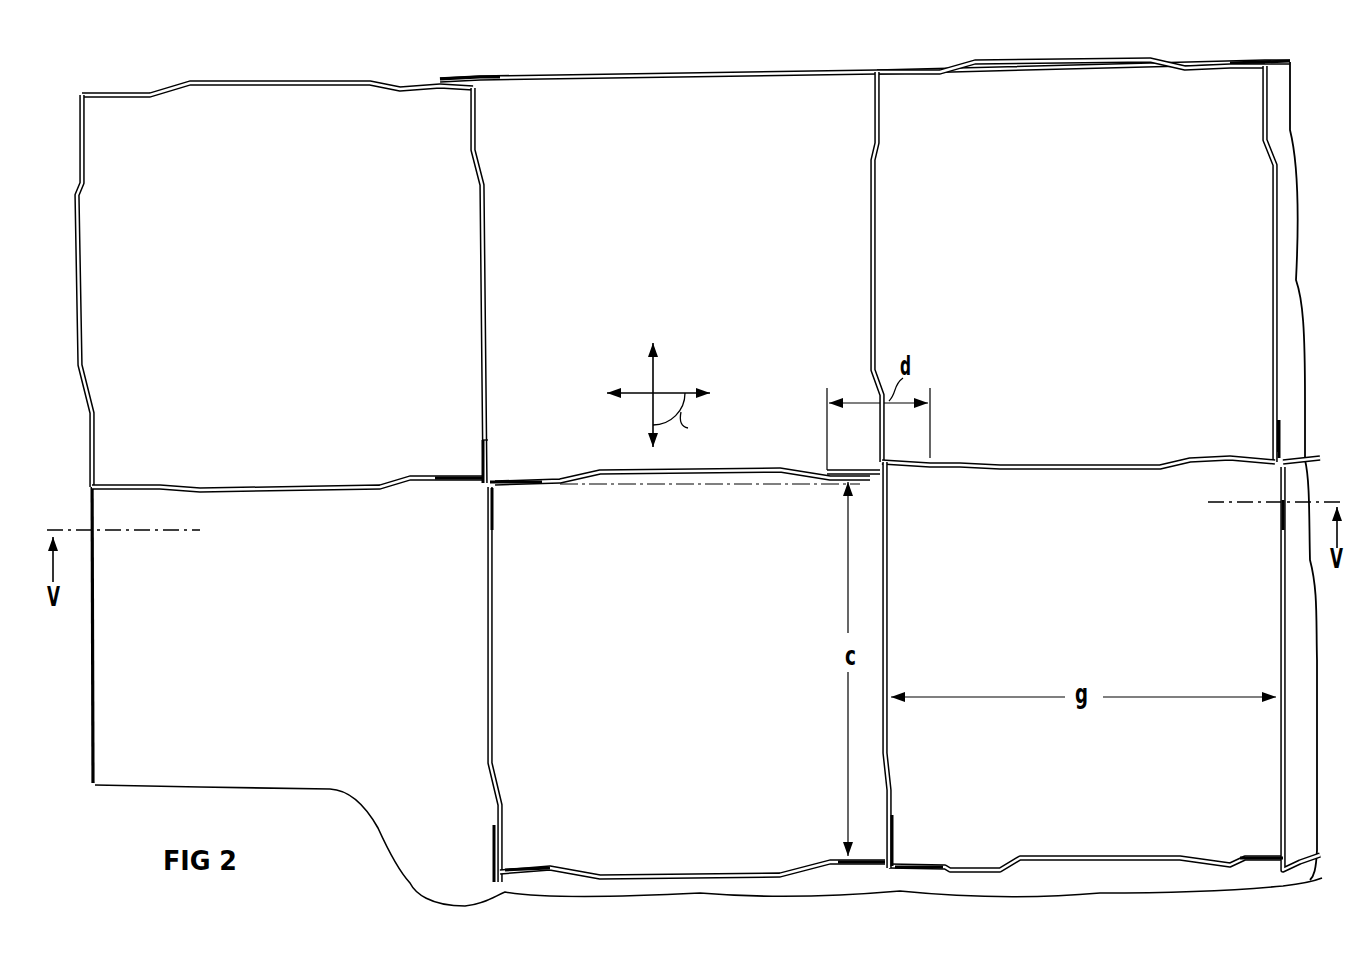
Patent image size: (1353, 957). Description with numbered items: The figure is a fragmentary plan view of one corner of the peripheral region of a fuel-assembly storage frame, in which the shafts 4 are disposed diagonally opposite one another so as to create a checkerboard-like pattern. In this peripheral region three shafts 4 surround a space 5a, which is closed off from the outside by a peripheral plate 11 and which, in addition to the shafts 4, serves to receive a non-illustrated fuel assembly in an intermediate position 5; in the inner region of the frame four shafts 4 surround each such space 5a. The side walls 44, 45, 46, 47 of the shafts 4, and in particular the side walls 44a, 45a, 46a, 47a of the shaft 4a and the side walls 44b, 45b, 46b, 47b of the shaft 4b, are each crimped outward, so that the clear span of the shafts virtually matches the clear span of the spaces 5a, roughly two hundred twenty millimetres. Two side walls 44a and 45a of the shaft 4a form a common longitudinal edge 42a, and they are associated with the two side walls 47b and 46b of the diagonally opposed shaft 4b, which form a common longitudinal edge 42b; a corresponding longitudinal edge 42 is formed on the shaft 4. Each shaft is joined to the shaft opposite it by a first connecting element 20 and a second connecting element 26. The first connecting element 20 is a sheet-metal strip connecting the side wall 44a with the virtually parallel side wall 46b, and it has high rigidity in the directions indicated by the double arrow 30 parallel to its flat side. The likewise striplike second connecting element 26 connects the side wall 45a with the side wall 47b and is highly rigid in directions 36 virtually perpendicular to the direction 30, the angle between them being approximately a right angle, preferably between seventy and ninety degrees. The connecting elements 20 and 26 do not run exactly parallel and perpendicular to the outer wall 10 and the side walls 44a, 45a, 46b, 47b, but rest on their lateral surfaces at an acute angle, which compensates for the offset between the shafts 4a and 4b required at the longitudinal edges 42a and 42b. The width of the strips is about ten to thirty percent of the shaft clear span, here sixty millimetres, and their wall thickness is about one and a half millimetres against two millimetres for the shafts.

The shaft 4 is at (1074, 263).
The shaft 4a is at (281, 286).
The shaft 4b is at (721, 672).
The intermediate position 5 is at (686, 462).
The space 5a is at (756, 110).
The outer wall 10 is at (695, 453).
The peripheral plate 11 is at (667, 76).
The first connecting element 20 is at (488, 441).
The second connecting element 26 is at (528, 479).
The double arrow 30 is at (657, 366).
The directions 36 is at (640, 396).
The longitudinal edge 42 is at (1268, 450).
The longitudinal edge 42a is at (478, 471).
The longitudinal edge 42b is at (494, 488).
The side wall 44 is at (1276, 300).
The side wall 44a is at (480, 300).
The side wall 44b is at (891, 633).
The side wall 45 is at (1065, 466).
The side wall 45a is at (256, 487).
The side wall 45b is at (680, 870).
The side wall 46 is at (880, 262).
The side wall 46a is at (79, 295).
The side wall 46b is at (494, 698).
The side wall 47 is at (1048, 62).
The side wall 47a is at (259, 86).
The side wall 47b is at (672, 473).